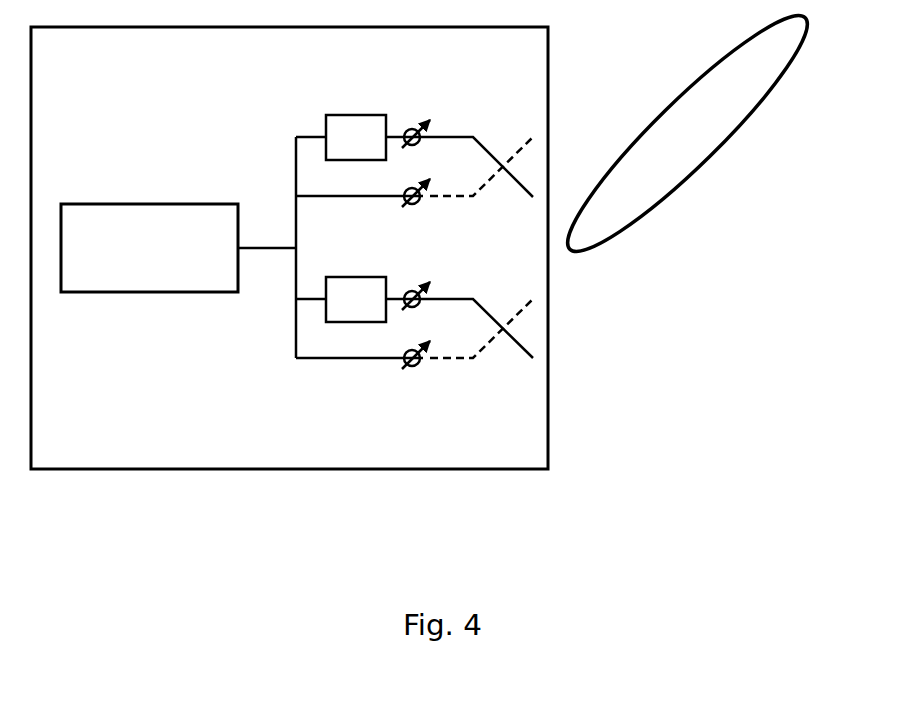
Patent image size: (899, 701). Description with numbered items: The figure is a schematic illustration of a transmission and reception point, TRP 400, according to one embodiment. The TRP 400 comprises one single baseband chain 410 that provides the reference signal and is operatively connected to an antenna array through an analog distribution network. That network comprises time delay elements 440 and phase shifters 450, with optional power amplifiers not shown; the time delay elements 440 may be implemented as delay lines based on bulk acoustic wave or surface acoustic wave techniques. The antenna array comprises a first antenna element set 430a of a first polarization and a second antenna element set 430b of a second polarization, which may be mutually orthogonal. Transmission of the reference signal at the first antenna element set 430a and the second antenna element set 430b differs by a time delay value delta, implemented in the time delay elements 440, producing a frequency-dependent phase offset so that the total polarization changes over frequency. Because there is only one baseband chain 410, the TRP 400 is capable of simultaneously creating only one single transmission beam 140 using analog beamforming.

The transmission and reception point (TRP) 400 is at (114, 432).
The baseband chain 410 is at (156, 203).
The time delay elements 440 is at (340, 116).
The phase shifters 450 is at (412, 130).
The first antenna element set 430a is at (524, 356).
The second antenna element set 430b is at (511, 320).
The transmission beam 140 is at (652, 197).